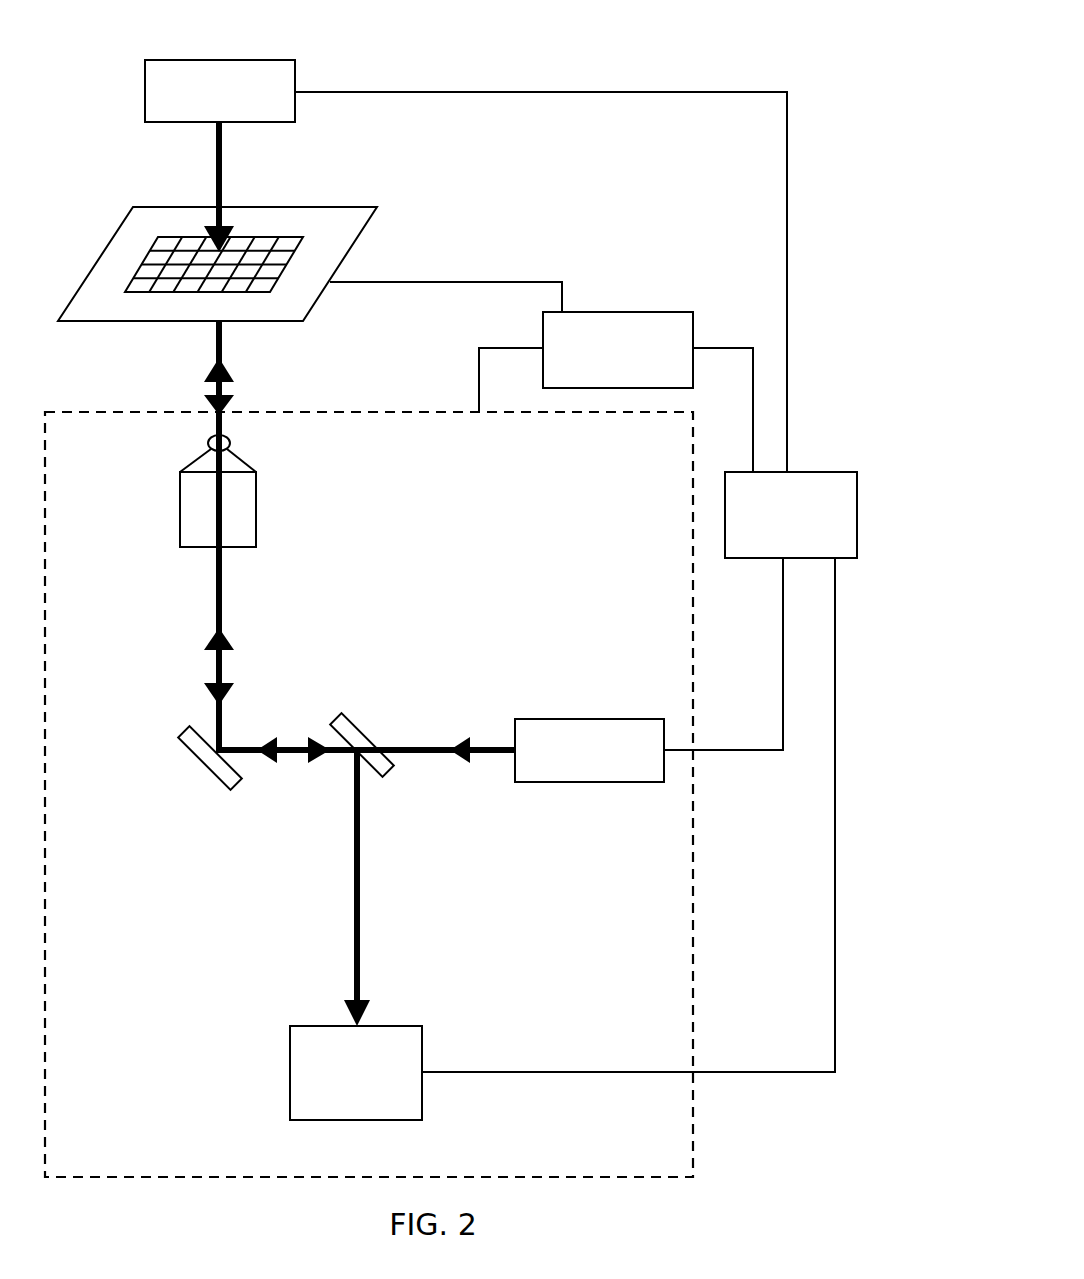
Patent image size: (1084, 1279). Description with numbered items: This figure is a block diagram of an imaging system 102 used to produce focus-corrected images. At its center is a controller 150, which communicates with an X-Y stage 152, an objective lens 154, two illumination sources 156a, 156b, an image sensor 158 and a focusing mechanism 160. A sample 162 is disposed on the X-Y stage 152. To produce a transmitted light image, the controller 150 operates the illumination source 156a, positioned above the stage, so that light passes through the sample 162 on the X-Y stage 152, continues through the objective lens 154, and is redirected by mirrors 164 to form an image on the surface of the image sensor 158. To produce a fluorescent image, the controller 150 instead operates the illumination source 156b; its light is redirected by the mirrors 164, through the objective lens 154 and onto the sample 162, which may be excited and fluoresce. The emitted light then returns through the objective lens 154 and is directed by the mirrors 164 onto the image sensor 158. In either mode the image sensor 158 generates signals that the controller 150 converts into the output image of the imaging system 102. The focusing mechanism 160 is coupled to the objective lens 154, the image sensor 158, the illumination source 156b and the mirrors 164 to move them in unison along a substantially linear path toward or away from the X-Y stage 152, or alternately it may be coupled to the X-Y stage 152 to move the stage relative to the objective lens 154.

The imaging system 102 is at (812, 132).
The controller 150 is at (857, 512).
The X-Y stage 152 is at (340, 268).
The objective lens 154 is at (200, 484).
The illumination source 156a is at (228, 60).
The illumination source 156b is at (563, 719).
The image sensor 158 is at (290, 1065).
The focusing mechanism 160 is at (637, 312).
The sample 162 is at (270, 292).
The mirrors 164 is at (200, 768).